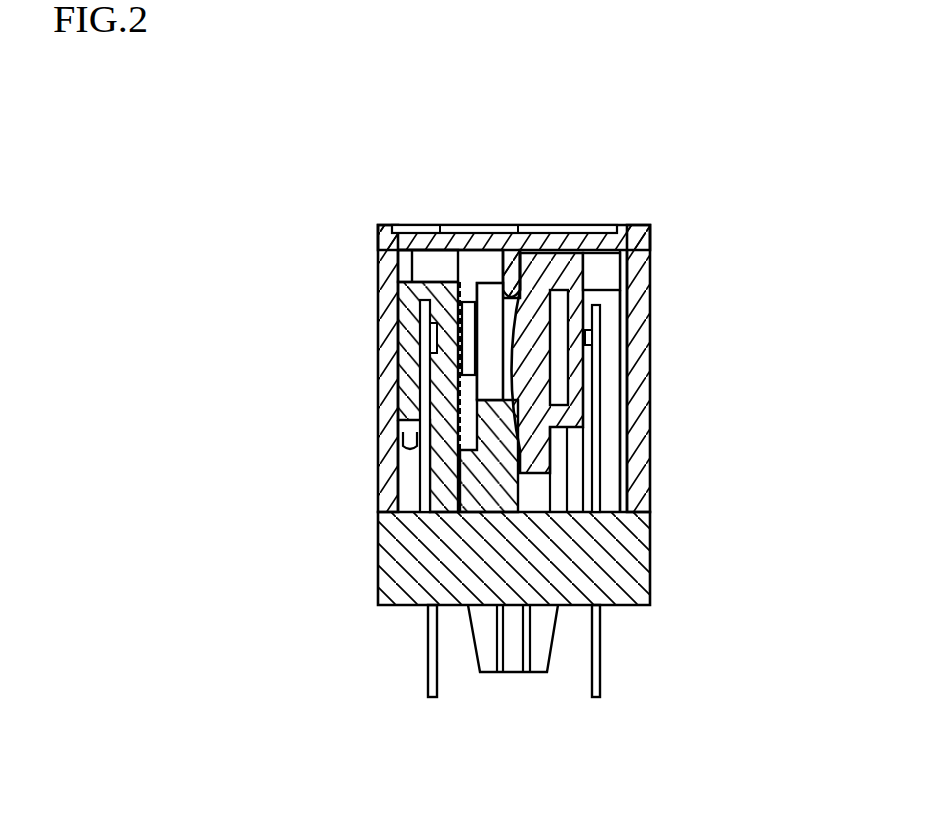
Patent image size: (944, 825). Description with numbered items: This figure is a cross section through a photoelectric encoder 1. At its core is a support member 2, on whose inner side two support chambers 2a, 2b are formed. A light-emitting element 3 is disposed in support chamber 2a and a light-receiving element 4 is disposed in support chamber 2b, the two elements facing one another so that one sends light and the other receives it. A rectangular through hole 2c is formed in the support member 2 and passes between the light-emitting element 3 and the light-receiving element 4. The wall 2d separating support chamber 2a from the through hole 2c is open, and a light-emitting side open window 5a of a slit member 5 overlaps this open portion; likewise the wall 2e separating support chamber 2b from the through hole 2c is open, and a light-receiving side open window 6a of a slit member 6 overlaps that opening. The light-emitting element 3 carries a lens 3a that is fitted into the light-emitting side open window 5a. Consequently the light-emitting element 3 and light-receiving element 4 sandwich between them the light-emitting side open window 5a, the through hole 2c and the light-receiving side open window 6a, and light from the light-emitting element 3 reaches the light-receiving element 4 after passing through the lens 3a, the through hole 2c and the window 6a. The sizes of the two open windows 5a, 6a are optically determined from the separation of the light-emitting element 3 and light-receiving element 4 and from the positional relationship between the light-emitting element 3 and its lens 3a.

The photoelectric encoder 1 is at (716, 118).
The support member 2 is at (376, 225).
The support chamber 2a is at (613, 473).
The support chamber 2b is at (408, 487).
The through hole 2c is at (488, 226).
The wall 2d is at (510, 226).
The wall 2e is at (465, 226).
The light-emitting element 3 is at (622, 350).
The lens 3a is at (512, 345).
The light-receiving element 4 is at (407, 298).
The slit member 5 is at (513, 443).
The light-emitting side open window 5a is at (595, 360).
The slit member 6 is at (463, 405).
The light-receiving side open window 6a is at (432, 360).